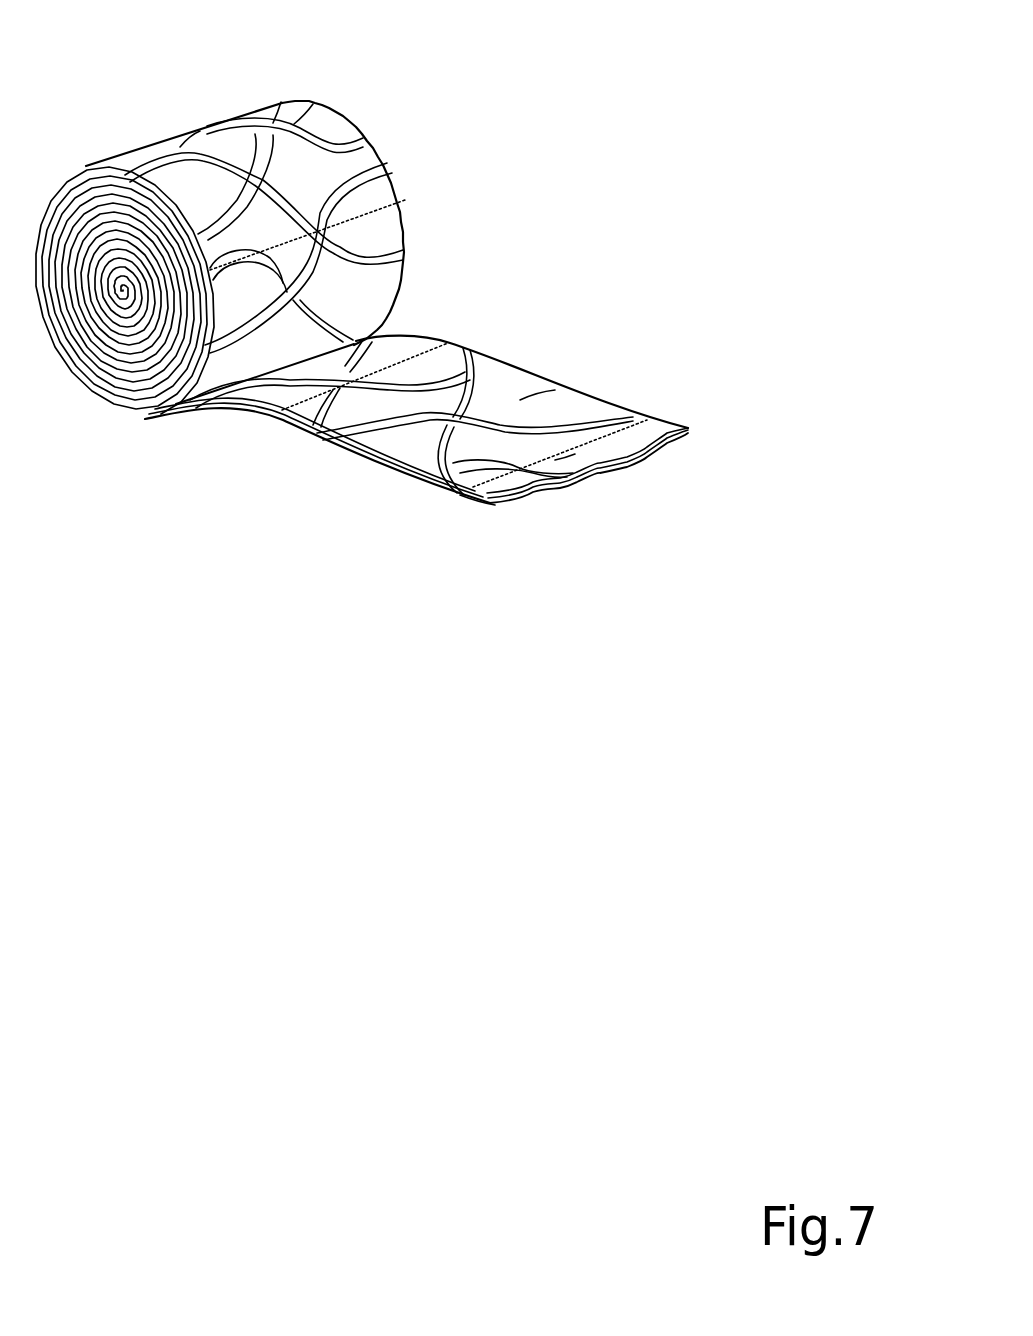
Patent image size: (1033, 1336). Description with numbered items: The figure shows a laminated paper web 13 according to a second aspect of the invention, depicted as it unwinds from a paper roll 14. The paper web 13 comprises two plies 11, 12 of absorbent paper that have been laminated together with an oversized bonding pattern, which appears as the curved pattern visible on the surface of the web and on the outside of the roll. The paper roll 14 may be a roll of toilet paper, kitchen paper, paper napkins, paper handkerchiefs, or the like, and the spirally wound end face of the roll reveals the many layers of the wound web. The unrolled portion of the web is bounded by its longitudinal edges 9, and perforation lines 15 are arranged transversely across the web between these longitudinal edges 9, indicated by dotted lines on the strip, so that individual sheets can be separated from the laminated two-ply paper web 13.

The longitudinal edges 9 is at (425, 338).
The ply of absorbent paper 11 is at (537, 395).
The ply of absorbent paper 12 is at (477, 507).
The laminated paper web 13 is at (386, 121).
The paper roll 14 is at (180, 147).
The perforation lines 15 is at (562, 457).